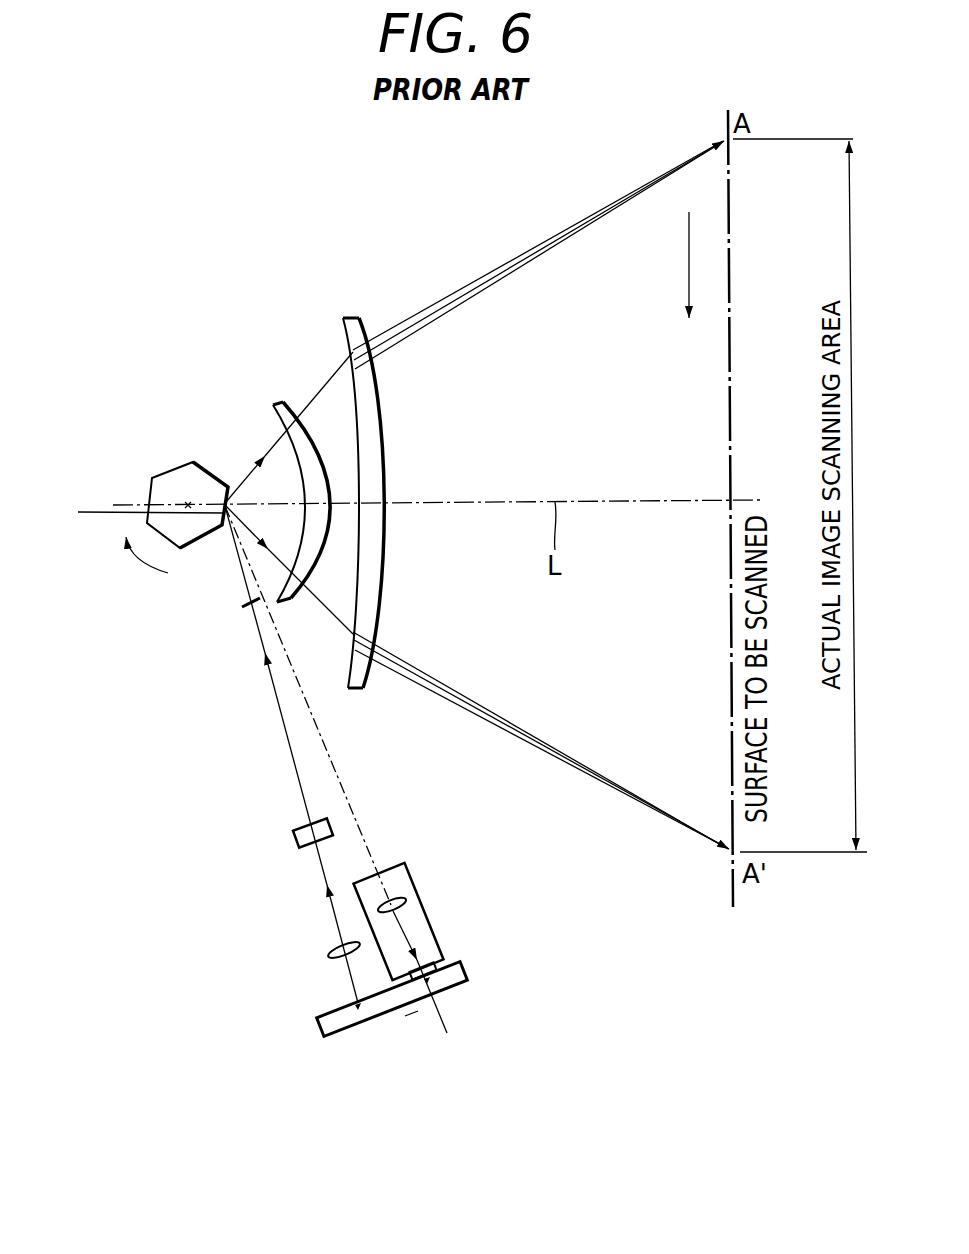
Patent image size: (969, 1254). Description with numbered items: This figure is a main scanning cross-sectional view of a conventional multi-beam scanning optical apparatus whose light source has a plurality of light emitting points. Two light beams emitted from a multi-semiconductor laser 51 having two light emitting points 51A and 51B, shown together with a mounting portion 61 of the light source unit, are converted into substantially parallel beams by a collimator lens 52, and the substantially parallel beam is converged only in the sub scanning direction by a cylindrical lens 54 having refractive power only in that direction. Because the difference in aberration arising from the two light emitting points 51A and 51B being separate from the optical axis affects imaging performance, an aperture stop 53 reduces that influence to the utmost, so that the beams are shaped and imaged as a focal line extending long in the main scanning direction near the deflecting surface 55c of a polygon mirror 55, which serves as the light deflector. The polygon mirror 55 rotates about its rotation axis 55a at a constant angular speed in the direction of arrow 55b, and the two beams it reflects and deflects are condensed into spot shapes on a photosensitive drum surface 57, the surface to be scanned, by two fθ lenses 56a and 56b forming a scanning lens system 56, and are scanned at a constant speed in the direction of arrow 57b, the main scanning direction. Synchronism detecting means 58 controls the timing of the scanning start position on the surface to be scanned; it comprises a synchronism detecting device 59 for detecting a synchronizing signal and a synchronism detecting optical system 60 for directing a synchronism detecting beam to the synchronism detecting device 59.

The multi-semiconductor laser 51 is at (318, 1018).
The light emitting point 51A is at (358, 1024).
The light emitting point 51B is at (367, 1024).
The collimator lens 52 is at (327, 953).
The aperture stop 53 is at (243, 609).
The cylindrical lens 54 is at (295, 825).
The polygon mirror 55 is at (167, 463).
The rotation axis of polygon mirror 55a is at (131, 514).
The arrow 55b is at (139, 564).
The deflecting surface 55c is at (221, 531).
The scanning lens system 56 is at (361, 265).
The fθ lens 56a is at (273, 404).
The fθ lens 56b is at (347, 318).
The photosensitive drum surface 57 is at (730, 257).
The arrow 57b is at (665, 265).
The synchronism detecting means 58 is at (443, 917).
The synchronism detecting device 59 is at (447, 990).
The synchronism detecting optical system 60 is at (410, 895).
The mounting portion of light source unit 61 is at (412, 1014).